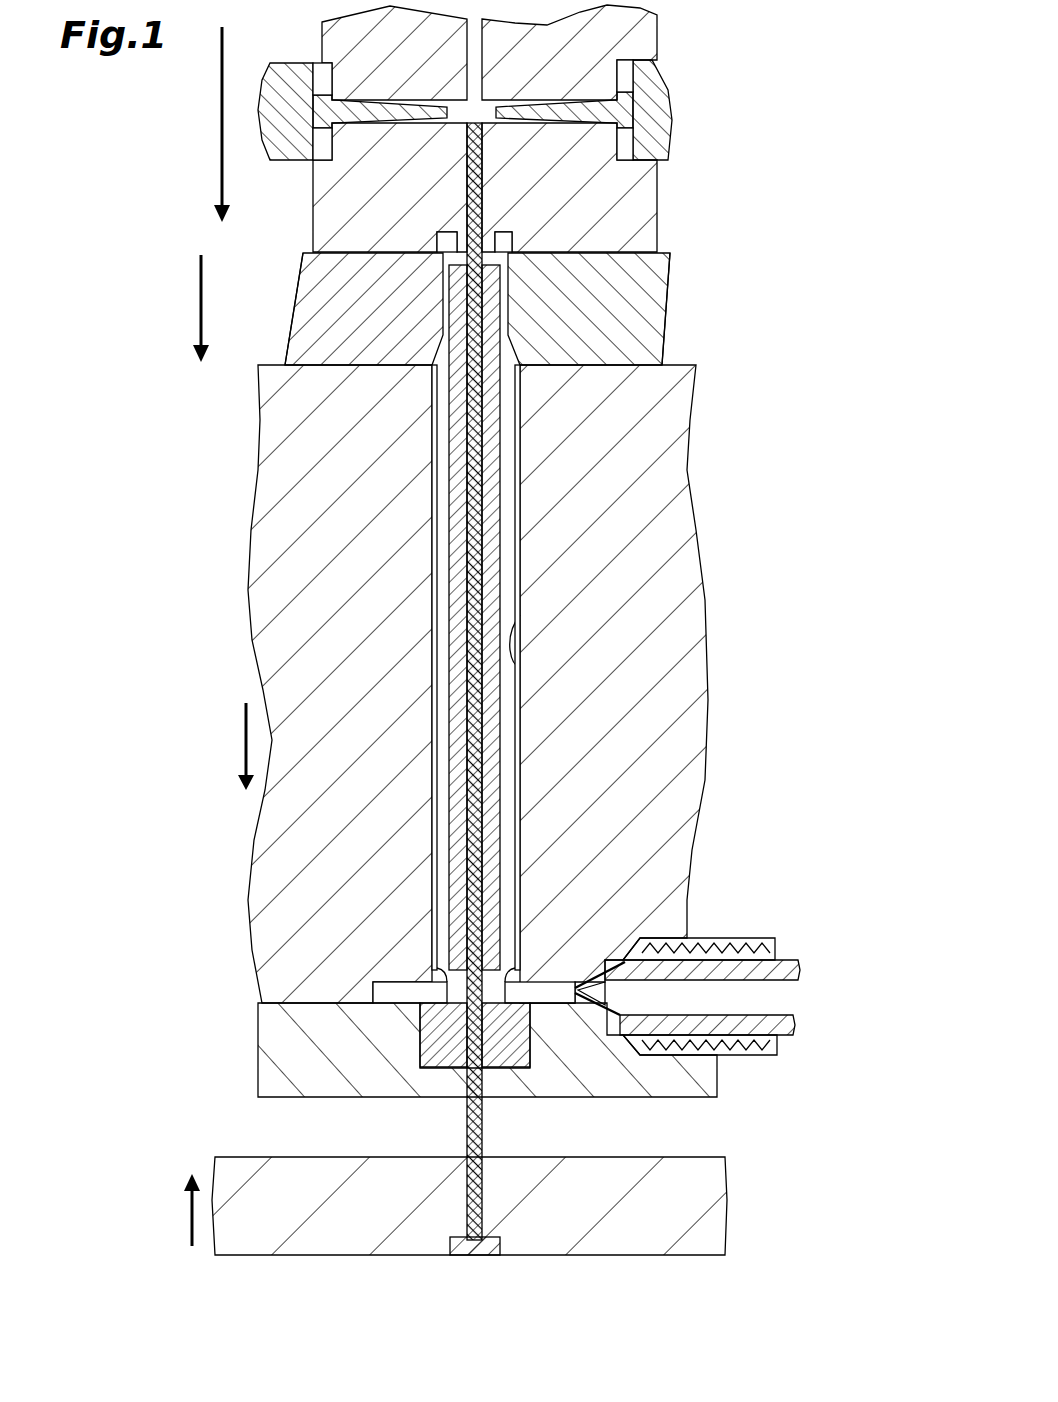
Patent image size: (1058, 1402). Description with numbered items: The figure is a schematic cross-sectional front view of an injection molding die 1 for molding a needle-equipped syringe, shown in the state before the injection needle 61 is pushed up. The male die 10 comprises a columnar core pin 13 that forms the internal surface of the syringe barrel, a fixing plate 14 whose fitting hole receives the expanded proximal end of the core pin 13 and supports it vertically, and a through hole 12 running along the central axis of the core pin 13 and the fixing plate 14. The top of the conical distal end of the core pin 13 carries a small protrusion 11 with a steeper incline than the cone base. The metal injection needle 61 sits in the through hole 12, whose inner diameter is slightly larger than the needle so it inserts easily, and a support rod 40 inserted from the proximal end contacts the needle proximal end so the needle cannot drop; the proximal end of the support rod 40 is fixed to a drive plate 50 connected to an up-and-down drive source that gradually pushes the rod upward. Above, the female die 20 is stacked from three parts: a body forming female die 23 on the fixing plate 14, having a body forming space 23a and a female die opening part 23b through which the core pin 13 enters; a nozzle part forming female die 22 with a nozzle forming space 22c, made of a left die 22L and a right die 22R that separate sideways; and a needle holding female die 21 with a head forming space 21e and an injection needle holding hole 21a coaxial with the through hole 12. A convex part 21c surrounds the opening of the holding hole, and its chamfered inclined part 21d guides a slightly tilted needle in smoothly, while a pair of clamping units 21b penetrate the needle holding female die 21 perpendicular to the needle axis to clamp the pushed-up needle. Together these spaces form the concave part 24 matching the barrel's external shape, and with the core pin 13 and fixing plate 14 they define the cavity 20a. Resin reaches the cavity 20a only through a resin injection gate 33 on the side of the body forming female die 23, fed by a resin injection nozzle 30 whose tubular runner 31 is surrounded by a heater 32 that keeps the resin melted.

The injection molding die 1 is at (136, 200).
The male die 10 is at (150, 457).
The protrusion 11 is at (470, 440).
The through hole 12 is at (458, 502).
The core pin 13 is at (440, 688).
The fixing plate 14 is at (266, 1014).
The female die 20 is at (815, 10).
The cavity 20a is at (762, 490).
The needle holding female die 21 is at (620, 25).
The injection needle holding hole 21a is at (484, 52).
The clamping units 21b is at (640, 113).
The convex part 21c is at (462, 235).
The inclined part 21d is at (490, 225).
The head forming space 21e is at (553, 256).
The nozzle part forming female die 22 is at (625, 326).
The left die 22L is at (343, 284).
The right die 22R is at (640, 290).
The nozzle forming space 22c is at (575, 300).
The body forming female die 23 is at (655, 388).
The body forming space 23a is at (519, 580).
The female die opening part 23b is at (457, 985).
The concave part 24 is at (517, 655).
The resin injection nozzle 30 is at (738, 930).
The runner 31 is at (782, 966).
The heater 32 is at (770, 1052).
The resin injection gate 33 is at (580, 990).
The support rod 40 is at (492, 1140).
The drive plate 50 is at (735, 1198).
The injection needle 61 is at (465, 148).